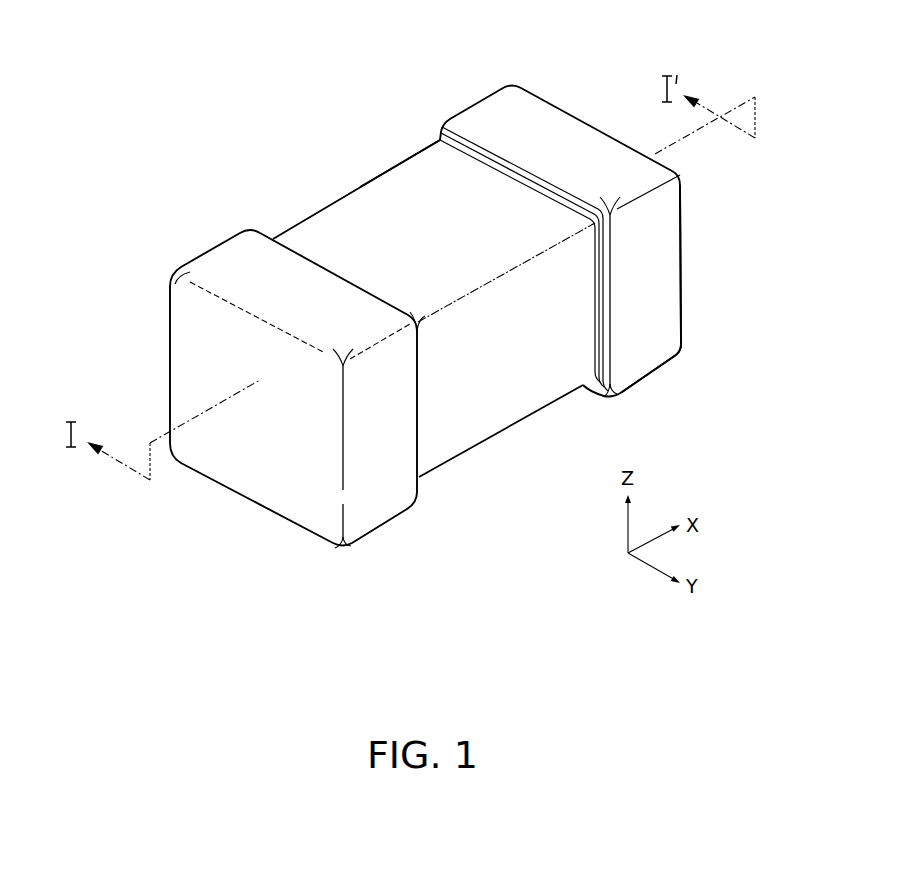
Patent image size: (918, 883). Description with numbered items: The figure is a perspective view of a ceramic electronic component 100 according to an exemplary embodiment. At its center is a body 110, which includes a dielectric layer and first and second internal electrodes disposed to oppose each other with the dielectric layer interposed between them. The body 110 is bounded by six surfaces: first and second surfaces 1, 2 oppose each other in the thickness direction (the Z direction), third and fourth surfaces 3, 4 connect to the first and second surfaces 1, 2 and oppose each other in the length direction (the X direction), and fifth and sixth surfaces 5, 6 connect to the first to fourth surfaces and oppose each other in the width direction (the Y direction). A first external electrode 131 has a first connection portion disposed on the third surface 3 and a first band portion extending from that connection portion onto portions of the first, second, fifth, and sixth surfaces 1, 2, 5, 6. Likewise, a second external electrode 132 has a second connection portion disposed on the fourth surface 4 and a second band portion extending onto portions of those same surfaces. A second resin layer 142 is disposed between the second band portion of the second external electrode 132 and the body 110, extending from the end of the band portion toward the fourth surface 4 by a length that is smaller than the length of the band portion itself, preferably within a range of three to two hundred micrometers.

The ceramic electronic component 100 is at (228, 88).
The body 110 is at (325, 235).
The first surface 1 is at (469, 410).
The second surface 2 is at (437, 185).
The third surface 3 is at (256, 452).
The fourth surface 4 is at (640, 252).
The fifth surface 5 is at (531, 378).
The sixth surface 6 is at (380, 211).
The first external electrode 131 is at (230, 262).
The second external electrode 132 is at (485, 118).
The second resin layer 142 is at (527, 166).